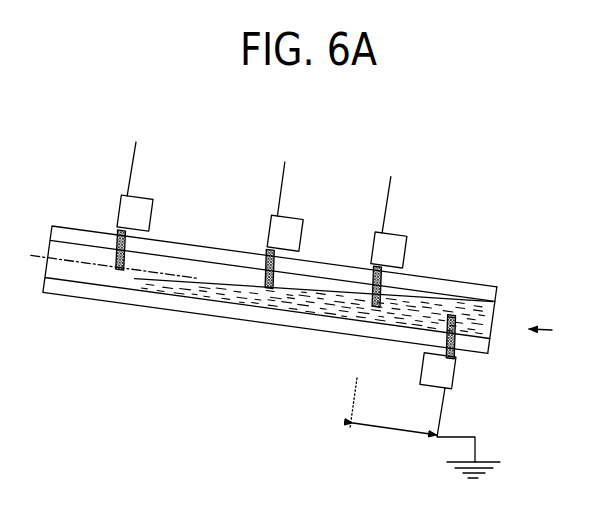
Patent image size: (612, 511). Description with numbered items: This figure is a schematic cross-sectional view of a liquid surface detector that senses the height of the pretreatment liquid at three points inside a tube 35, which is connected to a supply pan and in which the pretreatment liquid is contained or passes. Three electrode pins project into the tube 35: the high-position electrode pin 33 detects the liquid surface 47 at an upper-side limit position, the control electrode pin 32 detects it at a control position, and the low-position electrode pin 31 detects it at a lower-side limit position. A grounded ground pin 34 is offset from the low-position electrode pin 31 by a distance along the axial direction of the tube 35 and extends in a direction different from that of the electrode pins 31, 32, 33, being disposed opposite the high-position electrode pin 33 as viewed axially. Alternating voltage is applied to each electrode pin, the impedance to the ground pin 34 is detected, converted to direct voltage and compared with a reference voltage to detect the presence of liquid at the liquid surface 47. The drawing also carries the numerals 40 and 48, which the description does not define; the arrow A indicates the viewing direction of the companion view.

The electrode unit 40 is at (463, 172).
The low-position electrode pin 31 is at (400, 290).
The control electrode pin 32 is at (262, 279).
The high-position electrode pin 33 is at (130, 264).
The ground pin 34 is at (458, 348).
The tube 35 is at (204, 307).
The liquid surface 47 is at (142, 281).
The end wall 48 is at (523, 328).